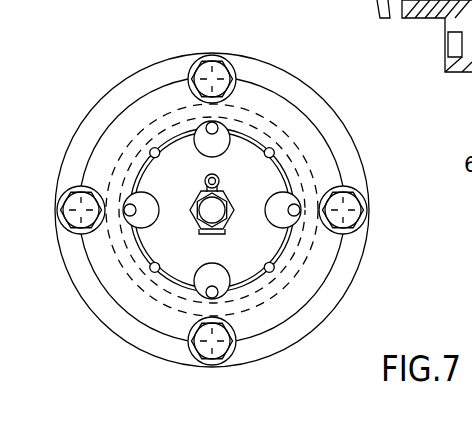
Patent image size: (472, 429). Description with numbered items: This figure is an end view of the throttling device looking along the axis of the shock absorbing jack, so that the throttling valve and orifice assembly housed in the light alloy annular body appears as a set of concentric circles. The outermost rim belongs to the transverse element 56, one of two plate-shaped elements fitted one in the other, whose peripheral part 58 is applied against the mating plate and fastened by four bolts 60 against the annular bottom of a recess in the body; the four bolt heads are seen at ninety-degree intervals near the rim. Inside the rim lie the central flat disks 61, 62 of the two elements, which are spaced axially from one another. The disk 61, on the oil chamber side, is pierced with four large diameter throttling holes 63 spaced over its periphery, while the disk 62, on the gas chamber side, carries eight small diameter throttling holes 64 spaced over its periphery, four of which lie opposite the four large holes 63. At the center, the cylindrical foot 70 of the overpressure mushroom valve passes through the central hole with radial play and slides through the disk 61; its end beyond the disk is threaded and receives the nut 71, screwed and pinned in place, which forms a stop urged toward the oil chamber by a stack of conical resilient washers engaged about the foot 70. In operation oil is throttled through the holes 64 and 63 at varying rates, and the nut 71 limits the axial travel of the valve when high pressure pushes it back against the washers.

The transverse element 56 is at (306, 304).
The peripheral part 58 is at (292, 337).
The bolts 60 is at (222, 66).
The central flat disk 61 is at (168, 237).
The central flat disk 62 is at (393, 36).
The large diameter throttling holes 63 is at (272, 143).
The small diameter throttling holes 64 is at (206, 121).
The cylindrical foot 70 is at (219, 213).
The nut 71 is at (219, 187).